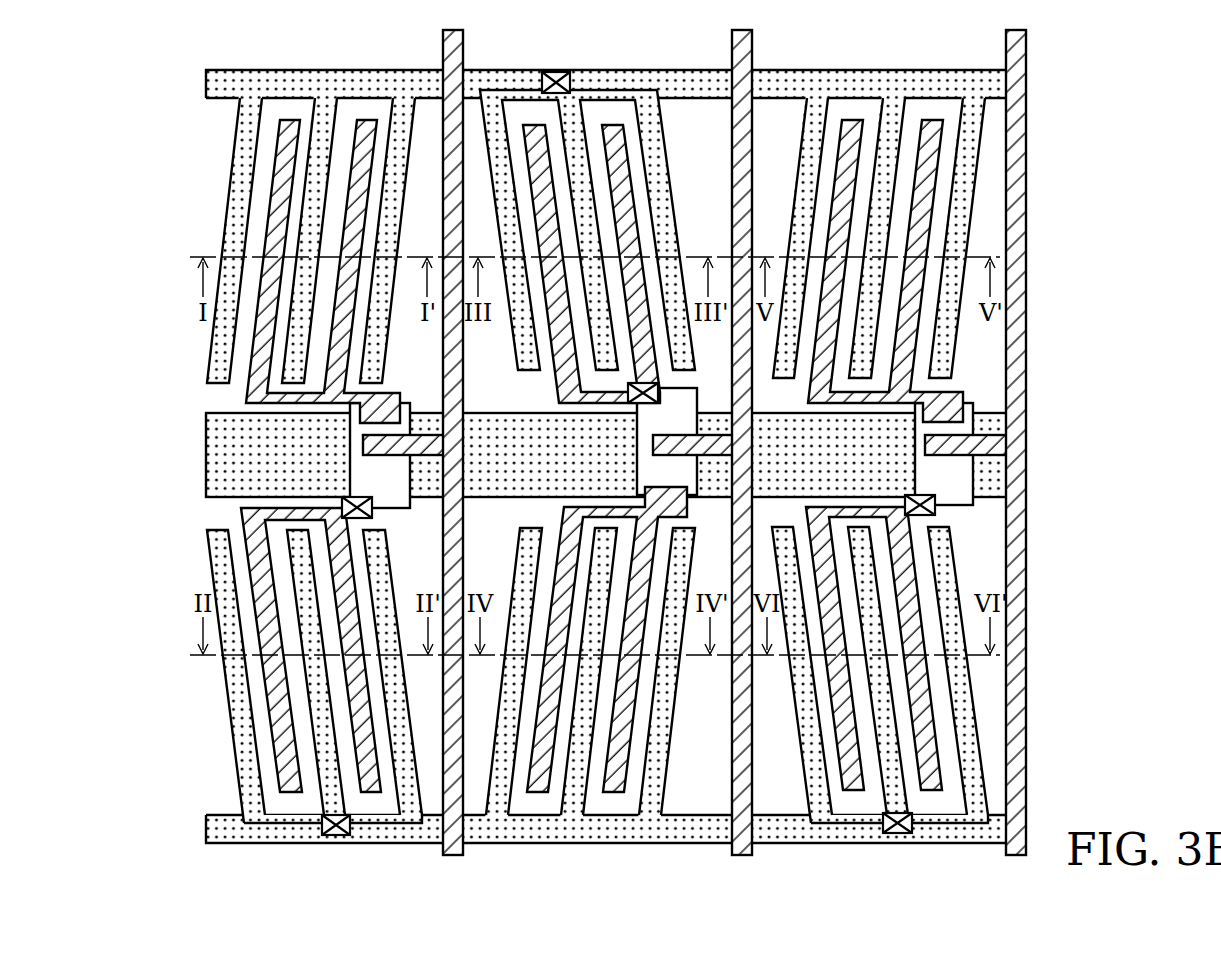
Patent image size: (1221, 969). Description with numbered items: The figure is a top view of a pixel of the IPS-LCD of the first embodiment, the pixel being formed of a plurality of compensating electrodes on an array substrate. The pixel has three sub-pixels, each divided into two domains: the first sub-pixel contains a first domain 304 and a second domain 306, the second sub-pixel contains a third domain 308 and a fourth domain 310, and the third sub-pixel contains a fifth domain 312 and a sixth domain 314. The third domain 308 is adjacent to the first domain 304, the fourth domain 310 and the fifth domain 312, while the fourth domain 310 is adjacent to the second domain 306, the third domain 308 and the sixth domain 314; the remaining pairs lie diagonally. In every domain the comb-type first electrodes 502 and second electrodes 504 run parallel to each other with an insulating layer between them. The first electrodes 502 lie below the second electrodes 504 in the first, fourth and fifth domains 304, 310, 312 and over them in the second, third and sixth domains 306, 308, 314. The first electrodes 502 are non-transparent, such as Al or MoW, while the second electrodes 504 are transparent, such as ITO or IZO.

The first domain 304 is at (236, 141).
The second domain 306 is at (237, 790).
The third domain 308 is at (716, 141).
The fourth domain 310 is at (718, 790).
The fifth domain 312 is at (796, 141).
The sixth domain 314 is at (800, 790).
The first electrode 502 is at (333, 112).
The second electrode 504 is at (288, 128).